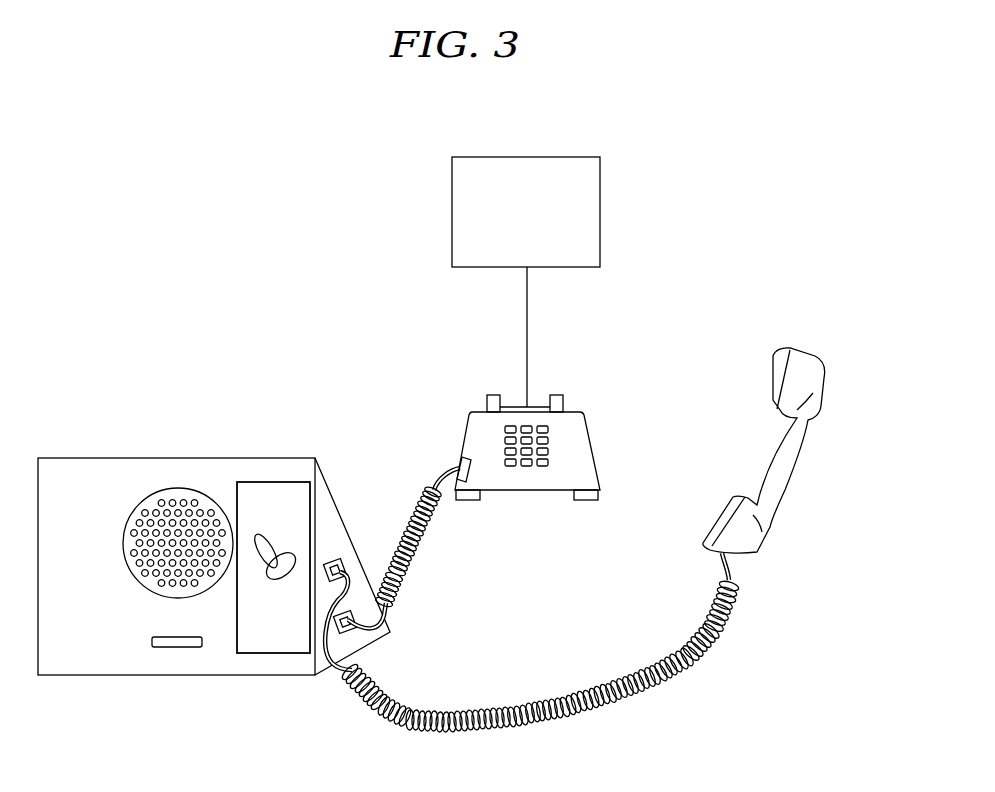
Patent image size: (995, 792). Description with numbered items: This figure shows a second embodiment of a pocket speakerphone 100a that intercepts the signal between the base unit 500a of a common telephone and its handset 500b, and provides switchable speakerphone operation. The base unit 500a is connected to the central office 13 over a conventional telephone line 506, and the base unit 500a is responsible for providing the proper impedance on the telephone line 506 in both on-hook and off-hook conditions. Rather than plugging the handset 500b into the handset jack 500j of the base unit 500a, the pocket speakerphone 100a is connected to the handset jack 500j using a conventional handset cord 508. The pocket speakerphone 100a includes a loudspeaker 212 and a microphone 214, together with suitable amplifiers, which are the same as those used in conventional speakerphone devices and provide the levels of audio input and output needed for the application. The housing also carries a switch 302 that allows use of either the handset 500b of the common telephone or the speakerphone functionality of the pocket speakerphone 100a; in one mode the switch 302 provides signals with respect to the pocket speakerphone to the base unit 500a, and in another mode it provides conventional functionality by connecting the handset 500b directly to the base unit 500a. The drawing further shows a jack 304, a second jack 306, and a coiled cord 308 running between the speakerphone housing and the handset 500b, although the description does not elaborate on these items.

The central office 13 is at (600, 212).
The pocket speakerphone 100a is at (248, 677).
The loudspeaker 212 is at (177, 488).
The microphone 214 is at (175, 648).
The switch 302 is at (278, 551).
The telephone line jack 304 is at (340, 565).
The handset jack 306 is at (352, 634).
The handset coiled cord 308 is at (593, 705).
The base unit 500a is at (527, 500).
The handset 500b is at (806, 468).
The handset jack 500j is at (460, 462).
The telephone line 506 is at (527, 338).
The handset cord 508 is at (405, 562).